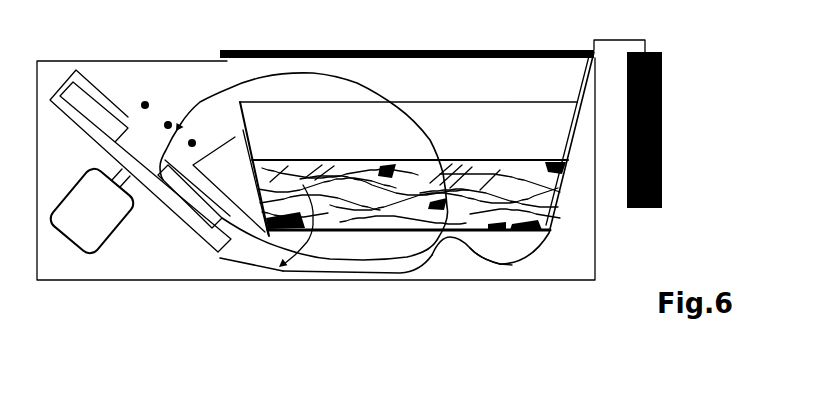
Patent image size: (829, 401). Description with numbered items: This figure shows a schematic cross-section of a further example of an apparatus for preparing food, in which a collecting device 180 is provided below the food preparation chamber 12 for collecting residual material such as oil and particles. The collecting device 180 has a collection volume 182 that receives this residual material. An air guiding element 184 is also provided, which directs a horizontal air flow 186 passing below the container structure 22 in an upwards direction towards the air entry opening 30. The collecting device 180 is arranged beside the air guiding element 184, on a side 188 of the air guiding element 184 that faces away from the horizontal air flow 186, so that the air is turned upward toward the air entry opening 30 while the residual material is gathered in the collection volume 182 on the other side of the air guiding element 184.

The food preparation chamber 12 is at (493, 126).
The container structure 22 is at (281, 266).
The air entry opening 30 is at (407, 212).
The collecting device 180 is at (480, 263).
The collection volume 182 is at (513, 264).
The air guiding element 184 is at (450, 253).
The horizontal air flow 186 is at (342, 257).
The side 188 is at (520, 254).